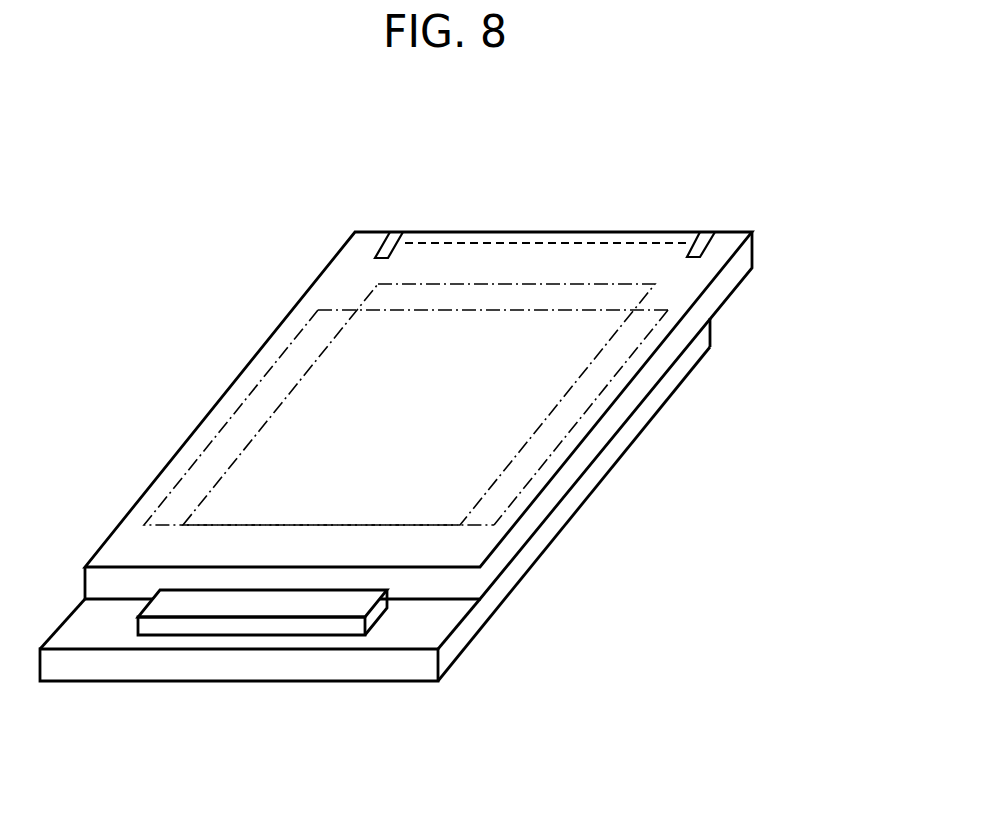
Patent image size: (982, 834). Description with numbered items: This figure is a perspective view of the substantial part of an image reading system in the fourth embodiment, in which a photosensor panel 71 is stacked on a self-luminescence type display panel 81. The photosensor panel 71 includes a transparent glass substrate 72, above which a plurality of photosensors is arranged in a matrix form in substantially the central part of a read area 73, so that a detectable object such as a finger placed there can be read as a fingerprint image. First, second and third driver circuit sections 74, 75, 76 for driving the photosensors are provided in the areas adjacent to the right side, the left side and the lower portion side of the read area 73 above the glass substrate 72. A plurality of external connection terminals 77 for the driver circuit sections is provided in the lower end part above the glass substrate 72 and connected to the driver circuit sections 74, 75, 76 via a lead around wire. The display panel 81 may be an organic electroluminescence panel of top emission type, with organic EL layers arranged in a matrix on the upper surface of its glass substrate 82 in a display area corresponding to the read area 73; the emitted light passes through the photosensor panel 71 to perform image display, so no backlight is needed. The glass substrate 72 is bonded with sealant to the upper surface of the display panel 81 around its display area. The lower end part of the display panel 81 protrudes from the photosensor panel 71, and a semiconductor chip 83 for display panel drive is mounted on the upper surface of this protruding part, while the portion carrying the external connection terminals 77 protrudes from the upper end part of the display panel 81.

The photosensor panel 71 is at (762, 278).
The glass substrate 72 is at (712, 300).
The read area 73 is at (300, 445).
The first driver circuit section 74 is at (188, 490).
The second driver circuit section 75 is at (565, 402).
The third driver circuit section 76 is at (510, 293).
The external connection terminals 77 is at (397, 231).
The display panel 81 is at (520, 596).
The glass substrate 82 is at (565, 508).
The semiconductor chip 83 is at (265, 604).